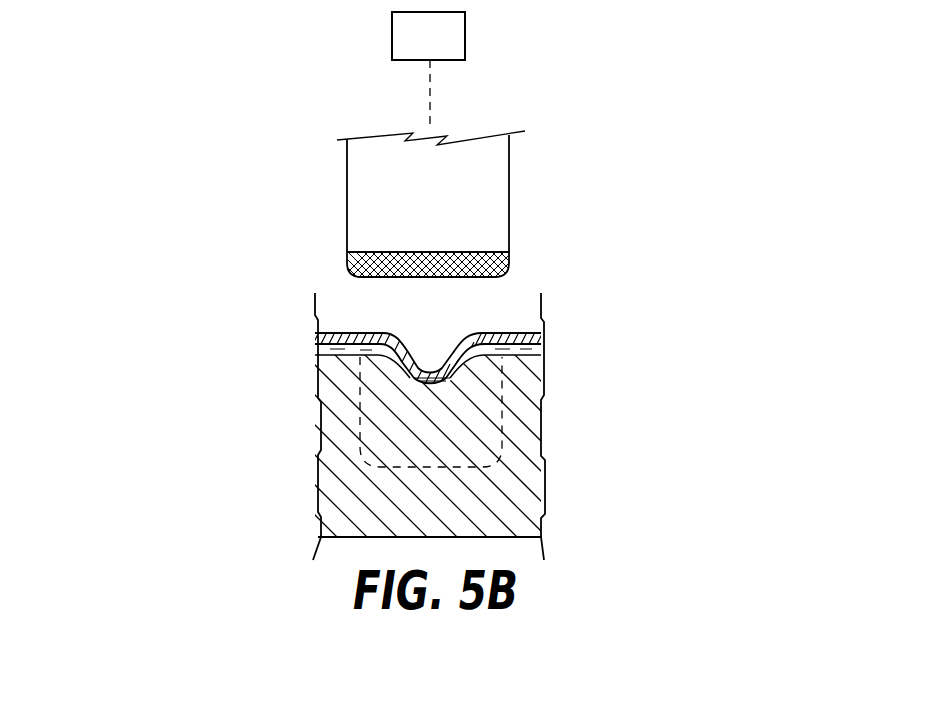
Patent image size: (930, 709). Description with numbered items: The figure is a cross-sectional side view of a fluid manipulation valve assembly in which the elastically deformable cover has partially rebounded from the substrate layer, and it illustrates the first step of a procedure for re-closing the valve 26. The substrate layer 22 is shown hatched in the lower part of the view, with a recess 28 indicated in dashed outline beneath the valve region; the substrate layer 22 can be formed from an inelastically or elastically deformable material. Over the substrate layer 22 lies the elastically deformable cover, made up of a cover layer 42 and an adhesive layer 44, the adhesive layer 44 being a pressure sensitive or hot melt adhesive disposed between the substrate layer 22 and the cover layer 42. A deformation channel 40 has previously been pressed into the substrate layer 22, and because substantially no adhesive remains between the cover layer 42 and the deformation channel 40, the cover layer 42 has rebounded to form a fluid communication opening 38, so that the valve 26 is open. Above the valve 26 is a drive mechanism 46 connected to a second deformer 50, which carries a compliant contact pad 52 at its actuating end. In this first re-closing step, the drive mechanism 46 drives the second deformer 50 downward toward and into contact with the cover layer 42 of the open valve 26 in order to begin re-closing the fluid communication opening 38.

The drive mechanism 46 is at (410, 30).
The second deformer 50 is at (509, 200).
The contact pad 52 is at (509, 260).
The valve 26 is at (303, 261).
The substrate layer 22 is at (508, 493).
The recess 28 is at (358, 425).
The adhesive layer 44 is at (541, 350).
The cover layer 42 is at (541, 340).
The deformation channel 40 is at (430, 381).
The fluid communication opening 38 is at (437, 382).